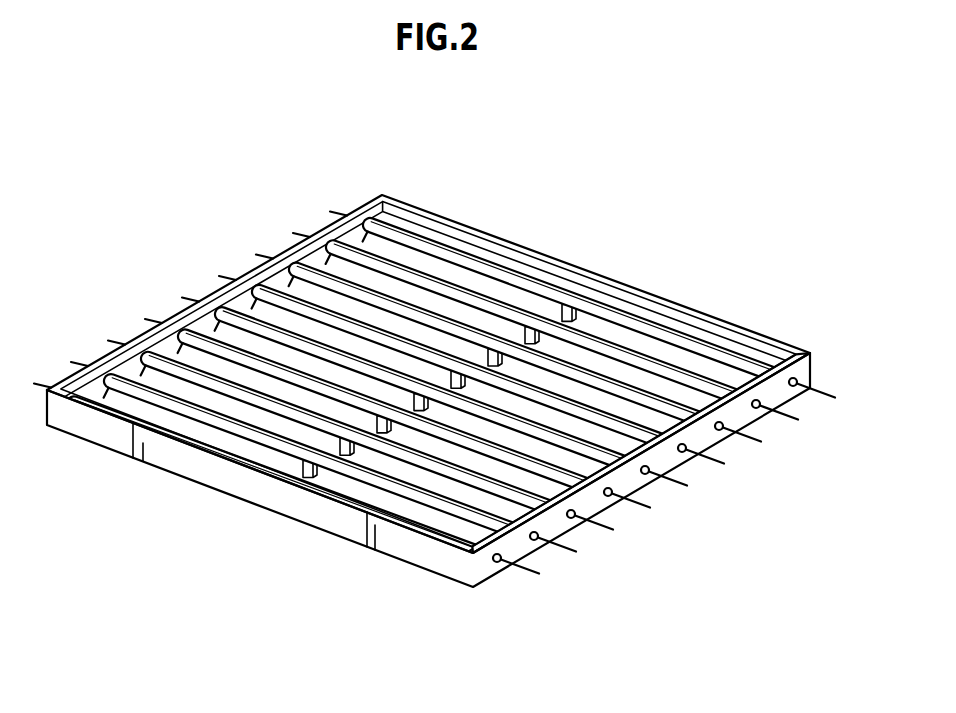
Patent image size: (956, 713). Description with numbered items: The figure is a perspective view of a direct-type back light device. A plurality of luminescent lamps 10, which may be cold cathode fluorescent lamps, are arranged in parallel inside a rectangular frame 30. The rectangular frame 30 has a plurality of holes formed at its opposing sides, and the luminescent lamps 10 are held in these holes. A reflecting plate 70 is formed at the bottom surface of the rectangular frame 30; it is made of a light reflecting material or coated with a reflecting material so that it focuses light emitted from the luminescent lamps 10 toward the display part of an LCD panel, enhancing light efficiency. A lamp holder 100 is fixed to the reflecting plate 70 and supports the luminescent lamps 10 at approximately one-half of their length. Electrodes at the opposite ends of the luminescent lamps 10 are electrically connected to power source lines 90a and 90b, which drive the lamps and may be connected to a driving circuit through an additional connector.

The luminescent lamp 10 is at (247, 440).
The rectangular frame 30 is at (435, 556).
The reflecting plate 70 is at (203, 392).
The lamp holder 100 is at (293, 485).
The power source line 90a is at (47, 388).
The power source line 90b is at (525, 576).